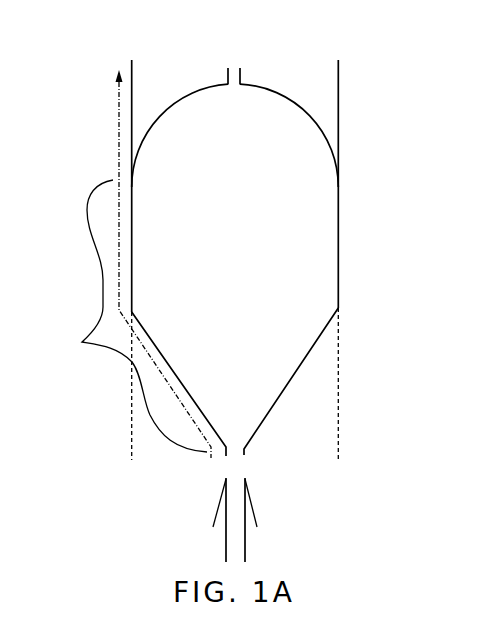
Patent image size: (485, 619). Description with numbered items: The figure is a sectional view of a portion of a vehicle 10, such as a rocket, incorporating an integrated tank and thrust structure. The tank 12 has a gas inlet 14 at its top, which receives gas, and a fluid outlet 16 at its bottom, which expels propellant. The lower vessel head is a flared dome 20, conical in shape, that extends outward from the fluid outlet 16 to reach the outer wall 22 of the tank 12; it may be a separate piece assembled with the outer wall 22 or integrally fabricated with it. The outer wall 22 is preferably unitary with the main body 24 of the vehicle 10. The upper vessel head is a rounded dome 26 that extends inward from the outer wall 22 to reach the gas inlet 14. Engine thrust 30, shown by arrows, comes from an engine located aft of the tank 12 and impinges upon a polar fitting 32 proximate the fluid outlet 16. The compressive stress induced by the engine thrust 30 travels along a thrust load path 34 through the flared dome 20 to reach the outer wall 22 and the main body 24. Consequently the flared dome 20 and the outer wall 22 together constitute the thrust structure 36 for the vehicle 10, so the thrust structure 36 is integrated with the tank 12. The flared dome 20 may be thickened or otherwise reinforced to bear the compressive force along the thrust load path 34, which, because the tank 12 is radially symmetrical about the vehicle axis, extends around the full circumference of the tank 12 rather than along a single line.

The vehicle 10 is at (90, 50).
The tank 12 is at (320, 198).
The gas inlet 14 is at (238, 64).
The fluid outlet 16 is at (238, 458).
The flared dome 20 is at (292, 378).
The outer wall 22 is at (340, 265).
The main body 24 is at (340, 97).
The rounded dome 26 is at (178, 101).
The engine thrust 30 is at (226, 542).
The polar fitting 32 is at (243, 450).
The thrust load path 34 is at (118, 153).
The thrust structure 36 is at (127, 316).